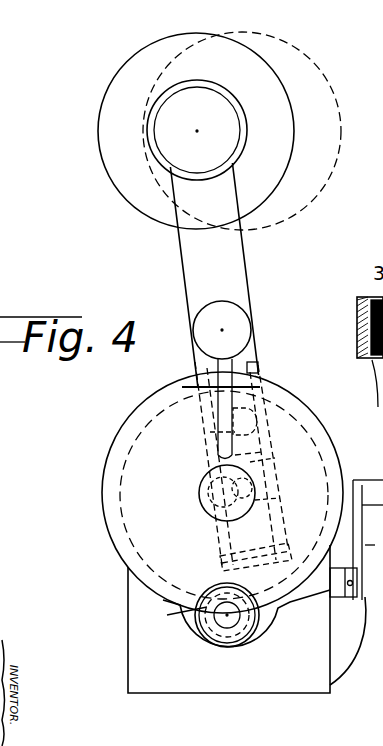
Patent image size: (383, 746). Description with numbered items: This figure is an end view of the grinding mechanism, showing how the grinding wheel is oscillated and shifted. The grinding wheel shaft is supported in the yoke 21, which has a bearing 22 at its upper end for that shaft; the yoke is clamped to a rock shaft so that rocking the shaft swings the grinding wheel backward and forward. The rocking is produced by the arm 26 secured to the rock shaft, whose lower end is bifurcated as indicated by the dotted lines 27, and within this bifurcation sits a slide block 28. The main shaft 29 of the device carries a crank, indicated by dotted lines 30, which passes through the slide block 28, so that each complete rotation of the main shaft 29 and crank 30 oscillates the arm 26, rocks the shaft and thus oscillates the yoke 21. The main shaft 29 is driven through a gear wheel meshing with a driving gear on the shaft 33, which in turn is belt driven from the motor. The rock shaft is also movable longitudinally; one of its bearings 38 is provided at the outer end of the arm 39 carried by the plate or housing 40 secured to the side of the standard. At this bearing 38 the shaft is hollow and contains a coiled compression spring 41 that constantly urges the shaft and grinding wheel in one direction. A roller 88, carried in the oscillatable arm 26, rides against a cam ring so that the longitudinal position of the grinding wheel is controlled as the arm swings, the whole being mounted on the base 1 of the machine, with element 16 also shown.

The base 1 is at (255, 586).
The wheel 16 is at (219, 131).
The yoke 21 is at (214, 275).
The bearing 22 is at (203, 85).
The arm 26 is at (280, 503).
The bifurcation (dotted lines) 27 is at (303, 403).
The slide block 28 is at (272, 460).
The main shaft 29 is at (206, 512).
The crank 30 is at (247, 478).
The shaft 33 is at (222, 618).
The bearing 38 is at (242, 320).
The arm 39 is at (233, 387).
The plate or housing 40 is at (222, 492).
The coiled compression spring 41 is at (367, 297).
The roller 88 is at (200, 437).